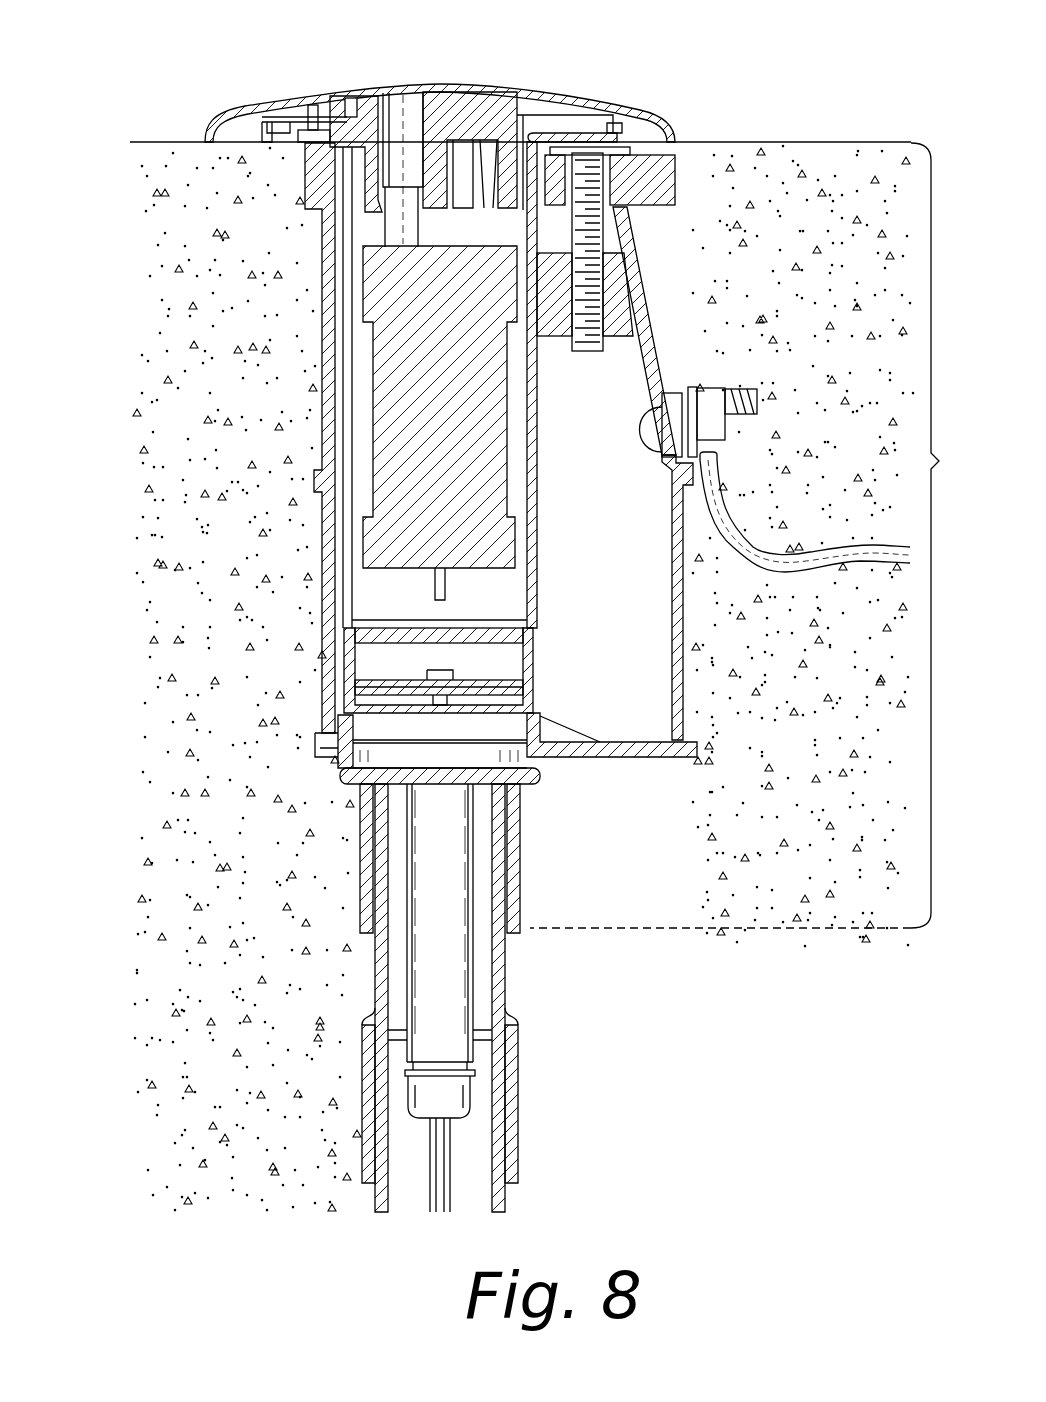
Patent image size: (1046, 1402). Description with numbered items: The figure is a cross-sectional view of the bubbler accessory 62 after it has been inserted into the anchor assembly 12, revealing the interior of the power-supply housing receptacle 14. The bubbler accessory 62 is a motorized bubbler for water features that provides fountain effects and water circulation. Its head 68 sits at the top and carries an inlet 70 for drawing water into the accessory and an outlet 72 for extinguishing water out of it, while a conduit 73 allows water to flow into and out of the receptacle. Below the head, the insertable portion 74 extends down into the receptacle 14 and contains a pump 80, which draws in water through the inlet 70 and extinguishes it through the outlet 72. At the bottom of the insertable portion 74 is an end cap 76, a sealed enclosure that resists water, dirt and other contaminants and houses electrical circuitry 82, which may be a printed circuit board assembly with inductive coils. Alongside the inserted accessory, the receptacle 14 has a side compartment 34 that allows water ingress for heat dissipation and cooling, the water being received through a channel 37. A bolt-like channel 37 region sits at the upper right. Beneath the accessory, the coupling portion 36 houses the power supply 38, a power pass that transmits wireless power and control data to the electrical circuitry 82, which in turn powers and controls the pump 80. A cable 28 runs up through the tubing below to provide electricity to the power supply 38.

The anchor assembly 12 is at (703, 231).
The power-supply housing receptacle 14 is at (748, 535).
The cable 28 is at (430, 1157).
The side compartment 34 is at (615, 553).
The coupling portion 36 is at (352, 738).
The channel 37 is at (575, 172).
The power supply 38 is at (433, 913).
The bubbler accessory 62 is at (222, 116).
The head 68 is at (538, 95).
The inlet 70 is at (350, 100).
The outlet 72 is at (408, 117).
The conduit 73 is at (488, 90).
The insertable portion 74 is at (340, 352).
The end cap 76 is at (285, 670).
The pump 80 is at (467, 438).
The electrical circuitry 82 is at (344, 668).